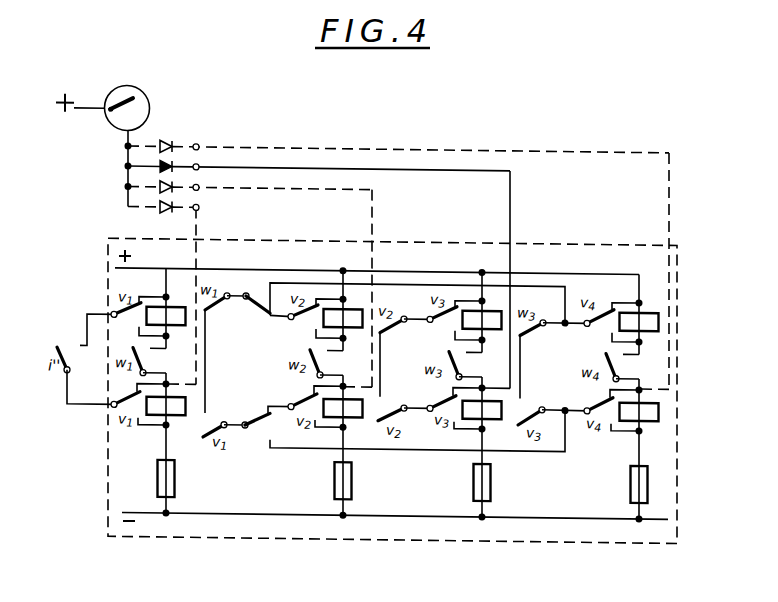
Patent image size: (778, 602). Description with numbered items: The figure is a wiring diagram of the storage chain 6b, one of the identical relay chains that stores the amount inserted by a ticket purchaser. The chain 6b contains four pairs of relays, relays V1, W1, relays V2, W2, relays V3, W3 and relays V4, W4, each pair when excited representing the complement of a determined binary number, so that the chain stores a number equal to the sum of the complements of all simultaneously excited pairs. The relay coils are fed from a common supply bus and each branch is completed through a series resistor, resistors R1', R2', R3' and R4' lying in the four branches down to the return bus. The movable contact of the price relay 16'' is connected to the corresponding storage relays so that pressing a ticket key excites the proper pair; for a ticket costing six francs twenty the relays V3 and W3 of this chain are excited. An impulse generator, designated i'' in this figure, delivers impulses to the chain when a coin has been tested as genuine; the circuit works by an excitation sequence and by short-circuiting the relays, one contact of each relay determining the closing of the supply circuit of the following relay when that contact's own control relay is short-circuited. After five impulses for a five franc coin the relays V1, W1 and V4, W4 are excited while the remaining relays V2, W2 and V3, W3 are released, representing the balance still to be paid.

The price relay 16'' is at (148, 106).
The storage chain 6b is at (580, 525).
The relay V1 is at (166, 316).
The relay V2 is at (343, 318).
The relay V3 is at (482, 320).
The relay V4 is at (639, 322).
The relay W1 is at (166, 406).
The relay W2 is at (343, 408).
The relay W3 is at (482, 410).
The relay W4 is at (639, 412).
The resistor R1' is at (181, 479).
The resistor R2' is at (358, 481).
The resistor R3' is at (497, 483).
The resistor R4' is at (654, 485).